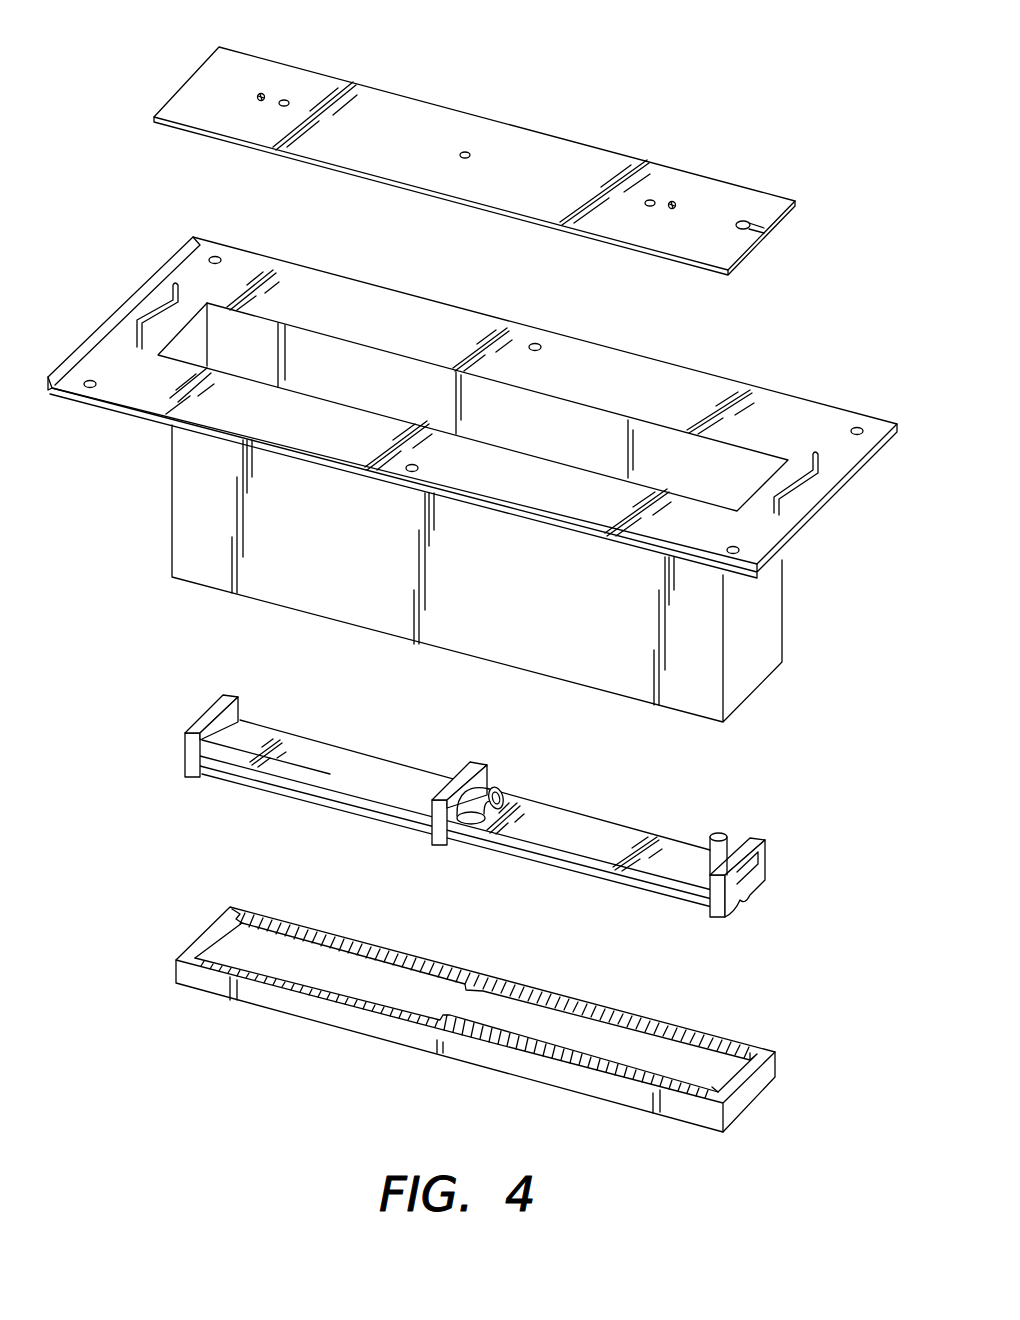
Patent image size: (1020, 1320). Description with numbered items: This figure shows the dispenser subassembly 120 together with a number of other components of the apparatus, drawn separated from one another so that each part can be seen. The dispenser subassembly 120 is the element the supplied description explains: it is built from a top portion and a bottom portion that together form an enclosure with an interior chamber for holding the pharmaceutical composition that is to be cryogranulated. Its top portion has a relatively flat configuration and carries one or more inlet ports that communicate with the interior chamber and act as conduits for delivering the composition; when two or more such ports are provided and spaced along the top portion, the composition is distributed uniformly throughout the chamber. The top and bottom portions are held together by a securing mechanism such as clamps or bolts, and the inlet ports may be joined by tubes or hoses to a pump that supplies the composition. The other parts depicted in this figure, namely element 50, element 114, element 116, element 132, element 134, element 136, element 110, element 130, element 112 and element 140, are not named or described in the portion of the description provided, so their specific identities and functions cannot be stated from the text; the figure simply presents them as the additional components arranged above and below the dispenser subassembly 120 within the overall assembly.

The mounting assembly 50 is at (706, 77).
The top plate 114 is at (482, 116).
The holes 116 is at (288, 101).
The mounting plate 132 is at (412, 298).
The holes 134 is at (252, 332).
The pins 136 is at (158, 300).
The housing 110 is at (172, 487).
The side walls 130 is at (672, 708).
The dispenser subassembly 120 is at (312, 742).
The base tray 112 is at (205, 925).
The channel 140 is at (331, 971).